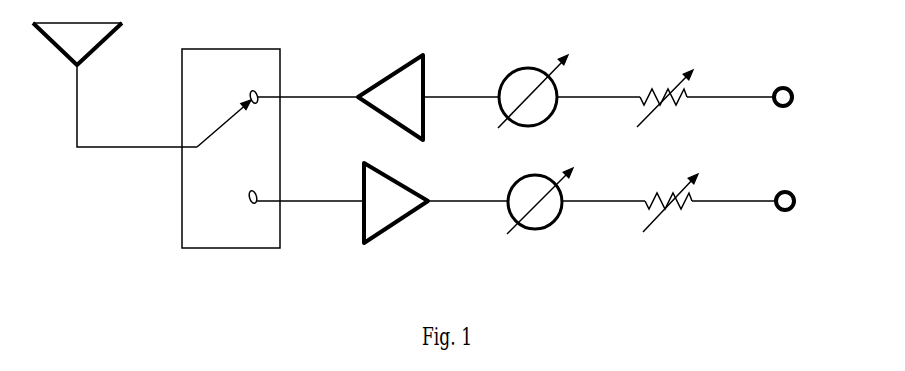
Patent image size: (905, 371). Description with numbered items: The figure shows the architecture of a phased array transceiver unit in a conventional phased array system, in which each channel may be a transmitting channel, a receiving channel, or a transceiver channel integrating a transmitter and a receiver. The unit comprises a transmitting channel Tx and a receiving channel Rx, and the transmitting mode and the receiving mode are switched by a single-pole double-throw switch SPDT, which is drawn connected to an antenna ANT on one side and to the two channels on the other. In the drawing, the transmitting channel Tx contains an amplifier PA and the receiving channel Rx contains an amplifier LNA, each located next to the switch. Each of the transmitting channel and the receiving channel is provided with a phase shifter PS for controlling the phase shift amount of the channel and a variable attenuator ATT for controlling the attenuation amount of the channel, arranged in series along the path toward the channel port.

The antenna ANT is at (115, 85).
The single-pole double-throw switch SPDT is at (231, 169).
The power amplifier PA is at (390, 81).
The phase shifter PS is at (535, 147).
The variable attenuator ATT is at (664, 147).
The transmitting channel Tx is at (802, 88).
The low noise amplifier LNA is at (396, 219).
The receiving channel Rx is at (803, 197).